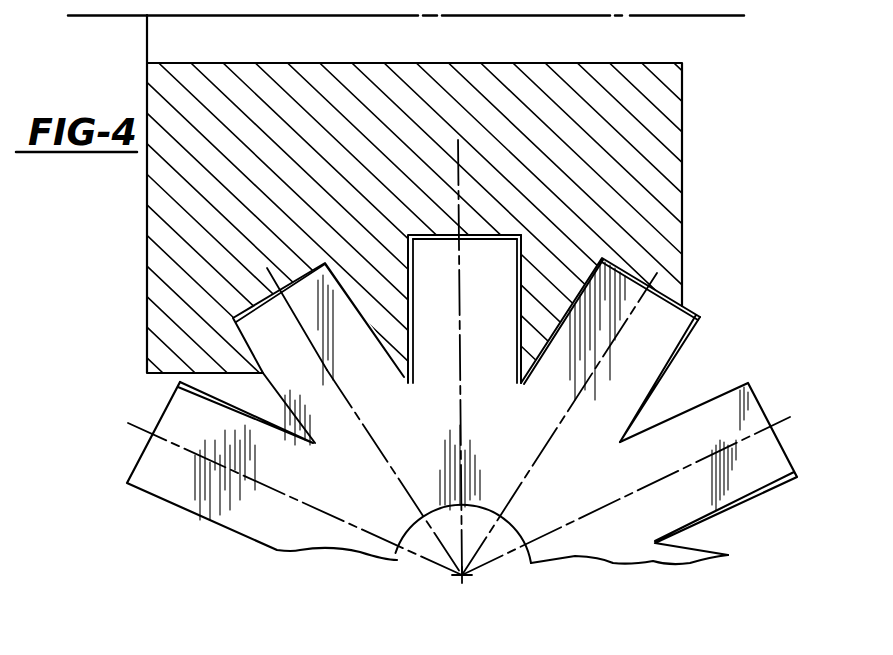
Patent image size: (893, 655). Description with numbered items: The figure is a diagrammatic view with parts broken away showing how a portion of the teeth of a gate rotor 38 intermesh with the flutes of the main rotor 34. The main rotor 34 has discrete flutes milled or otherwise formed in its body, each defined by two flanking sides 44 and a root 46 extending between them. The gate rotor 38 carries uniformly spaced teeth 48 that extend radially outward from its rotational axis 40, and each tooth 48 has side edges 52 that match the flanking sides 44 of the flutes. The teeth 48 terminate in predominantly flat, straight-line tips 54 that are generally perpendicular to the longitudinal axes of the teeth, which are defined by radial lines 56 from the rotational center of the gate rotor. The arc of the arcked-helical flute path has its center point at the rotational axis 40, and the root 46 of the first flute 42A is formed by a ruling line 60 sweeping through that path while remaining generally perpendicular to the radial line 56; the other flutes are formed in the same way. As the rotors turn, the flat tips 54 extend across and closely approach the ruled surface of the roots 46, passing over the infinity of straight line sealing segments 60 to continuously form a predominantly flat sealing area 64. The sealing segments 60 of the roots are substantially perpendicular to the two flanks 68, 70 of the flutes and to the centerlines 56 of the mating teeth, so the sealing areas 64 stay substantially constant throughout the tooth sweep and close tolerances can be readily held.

The main rotor 34 is at (692, 106).
The gate rotor 38 is at (710, 300).
The second axis 40 is at (468, 578).
The first flute 42A is at (245, 336).
The flanking side 44 is at (522, 278).
The root 46 is at (465, 258).
The tooth 48 is at (752, 413).
The side edge 52 is at (685, 346).
The tip 54 is at (485, 236).
The radial line 56 is at (361, 419).
The straight line sealing segment 60 is at (232, 318).
The linear sealing area 64 is at (505, 240).
The flank 68 is at (520, 248).
The flank 70 is at (407, 241).